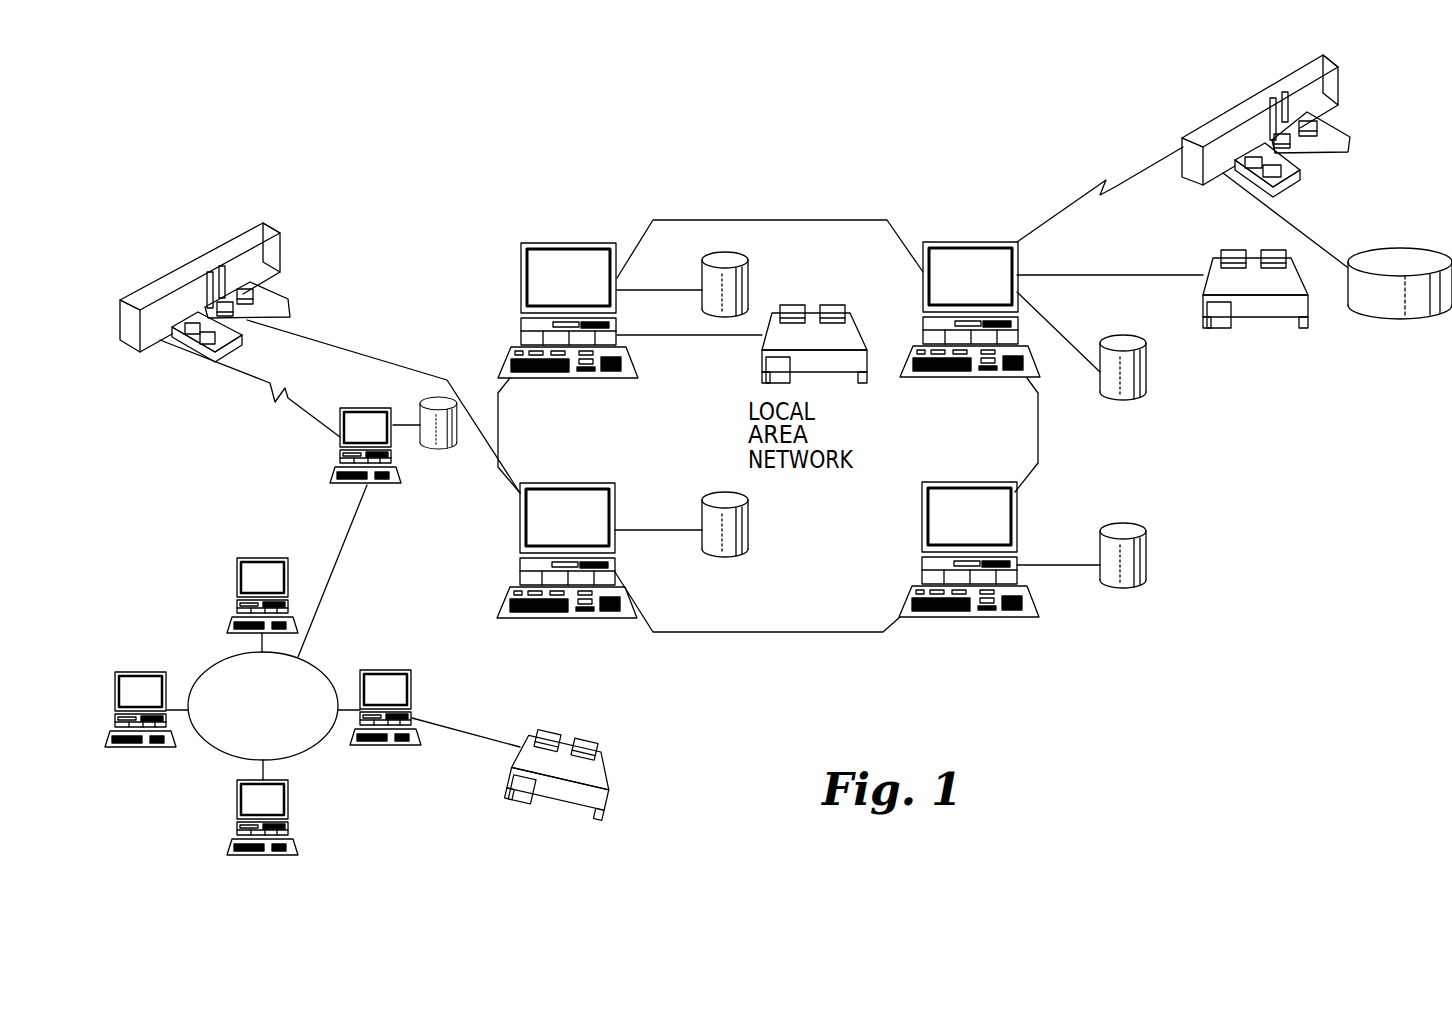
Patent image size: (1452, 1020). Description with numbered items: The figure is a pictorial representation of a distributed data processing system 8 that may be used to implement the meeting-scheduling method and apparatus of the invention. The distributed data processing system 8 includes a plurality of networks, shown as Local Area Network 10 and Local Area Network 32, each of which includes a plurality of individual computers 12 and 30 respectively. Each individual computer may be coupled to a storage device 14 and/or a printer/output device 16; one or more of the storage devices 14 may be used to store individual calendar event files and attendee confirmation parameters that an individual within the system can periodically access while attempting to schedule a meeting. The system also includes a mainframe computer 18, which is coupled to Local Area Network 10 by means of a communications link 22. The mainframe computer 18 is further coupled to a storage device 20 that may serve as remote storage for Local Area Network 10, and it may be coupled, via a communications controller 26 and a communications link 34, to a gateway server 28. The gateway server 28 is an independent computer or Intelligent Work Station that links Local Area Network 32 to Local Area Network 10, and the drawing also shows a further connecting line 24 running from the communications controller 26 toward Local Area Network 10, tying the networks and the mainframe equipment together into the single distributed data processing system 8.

The distributed data processing system 8 is at (801, 182).
The local area network 10 is at (797, 632).
The individual computer 12 is at (588, 243).
The storage device 14 is at (748, 272).
The printer/output device 16 is at (812, 313).
The mainframe computer 18 is at (1263, 97).
The storage device 20 is at (1420, 250).
The communications link 22 is at (1140, 172).
The communications link 24 is at (372, 357).
The communications controller 26 is at (270, 225).
The gateway server 28 is at (365, 408).
The individual computer 30 is at (272, 558).
The local area network 32 is at (217, 752).
The communications link 34 is at (288, 410).